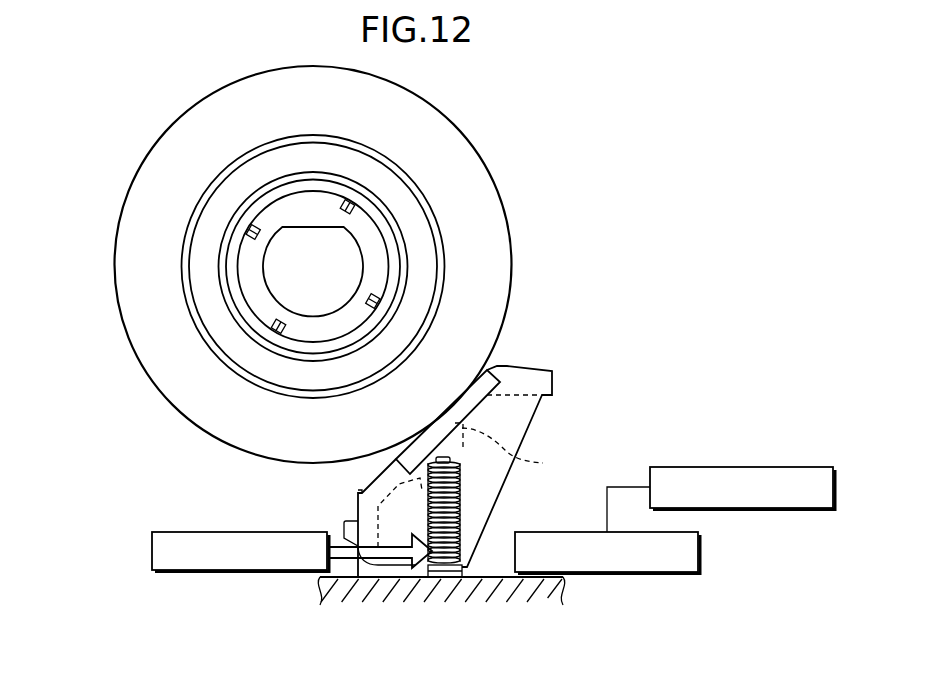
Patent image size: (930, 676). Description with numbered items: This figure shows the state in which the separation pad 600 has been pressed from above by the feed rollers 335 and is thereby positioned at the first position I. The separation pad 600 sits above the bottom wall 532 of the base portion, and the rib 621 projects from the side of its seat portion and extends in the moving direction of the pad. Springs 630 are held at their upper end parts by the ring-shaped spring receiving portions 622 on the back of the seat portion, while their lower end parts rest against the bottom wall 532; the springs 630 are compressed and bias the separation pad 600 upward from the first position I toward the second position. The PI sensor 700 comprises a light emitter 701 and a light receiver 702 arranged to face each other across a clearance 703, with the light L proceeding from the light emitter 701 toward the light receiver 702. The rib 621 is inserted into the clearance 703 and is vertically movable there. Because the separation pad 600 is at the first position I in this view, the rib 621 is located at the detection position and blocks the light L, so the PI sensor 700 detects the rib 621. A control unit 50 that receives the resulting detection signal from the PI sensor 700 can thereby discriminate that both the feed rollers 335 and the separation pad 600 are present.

The feed rollers 335 is at (497, 236).
The separation pad 600 is at (501, 494).
The first position I is at (538, 428).
The spring receiving portions 622 is at (526, 453).
The rib 621 is at (457, 478).
The springs 630 is at (438, 582).
The bottom wall 532 is at (393, 588).
The clearance 703 is at (505, 566).
The light emitter 701 is at (153, 550).
The light receiver 702 is at (701, 555).
The PI sensor 700 is at (414, 587).
The light L is at (340, 583).
The control unit 50 is at (753, 466).